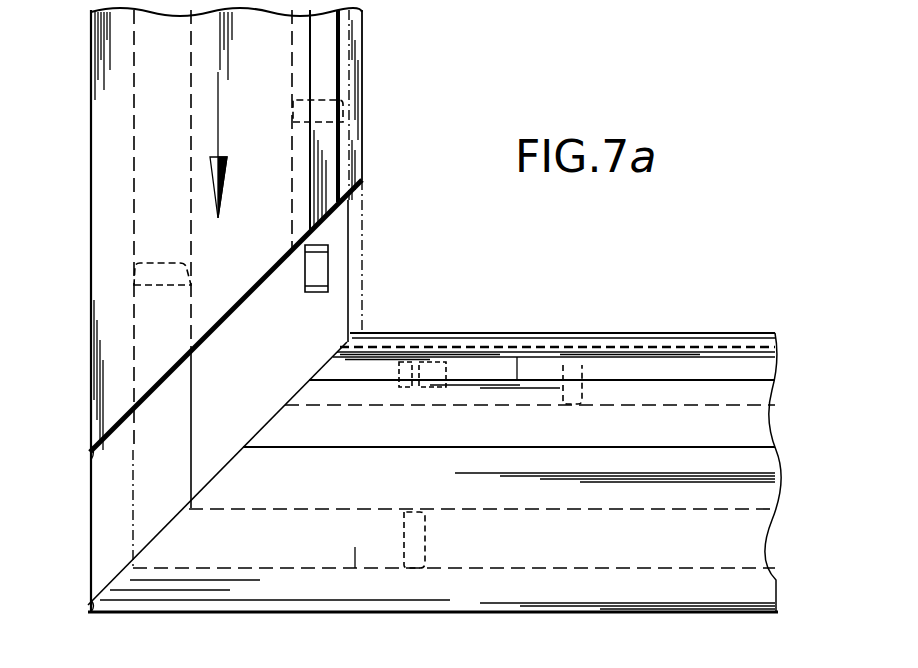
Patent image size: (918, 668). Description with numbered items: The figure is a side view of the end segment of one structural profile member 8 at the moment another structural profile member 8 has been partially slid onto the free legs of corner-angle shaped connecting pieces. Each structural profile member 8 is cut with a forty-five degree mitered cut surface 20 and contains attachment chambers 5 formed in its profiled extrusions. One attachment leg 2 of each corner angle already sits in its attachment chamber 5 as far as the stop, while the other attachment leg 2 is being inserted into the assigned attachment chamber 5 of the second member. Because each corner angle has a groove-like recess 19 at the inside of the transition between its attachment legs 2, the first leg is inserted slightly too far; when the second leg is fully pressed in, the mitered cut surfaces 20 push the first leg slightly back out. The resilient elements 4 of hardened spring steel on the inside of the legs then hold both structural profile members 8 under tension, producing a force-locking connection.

The structural profile member 8 is at (376, 82).
The attachment chamber 5 is at (292, 68).
The attachment leg 2 is at (342, 222).
The resilient element 4 is at (325, 268).
The recess 19 is at (206, 501).
The mitered cut surface 20 is at (91, 455).